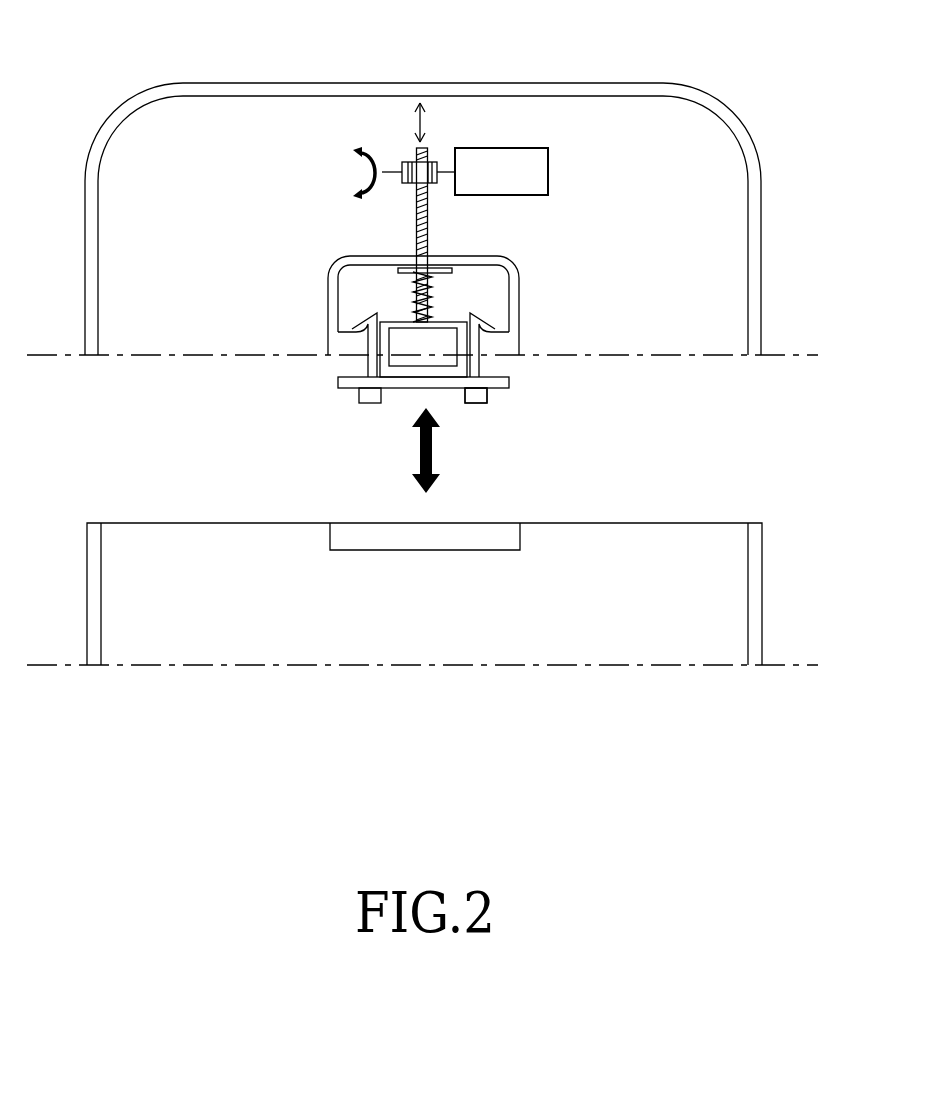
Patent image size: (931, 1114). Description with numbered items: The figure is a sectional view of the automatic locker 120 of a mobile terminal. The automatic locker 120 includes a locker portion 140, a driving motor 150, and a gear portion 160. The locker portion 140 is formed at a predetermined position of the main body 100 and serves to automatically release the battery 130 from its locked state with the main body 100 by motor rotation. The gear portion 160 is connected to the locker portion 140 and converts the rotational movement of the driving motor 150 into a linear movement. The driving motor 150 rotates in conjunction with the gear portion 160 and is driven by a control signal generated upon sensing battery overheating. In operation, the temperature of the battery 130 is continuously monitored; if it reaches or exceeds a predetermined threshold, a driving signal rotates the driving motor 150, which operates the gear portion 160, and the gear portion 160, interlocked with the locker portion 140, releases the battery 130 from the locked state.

The main body 100 is at (786, 245).
The automatic locker 120 is at (318, 413).
The battery 130 is at (789, 594).
The locker portion 140 is at (487, 393).
The driving motor 150 is at (548, 172).
The gear portion 160 is at (428, 158).